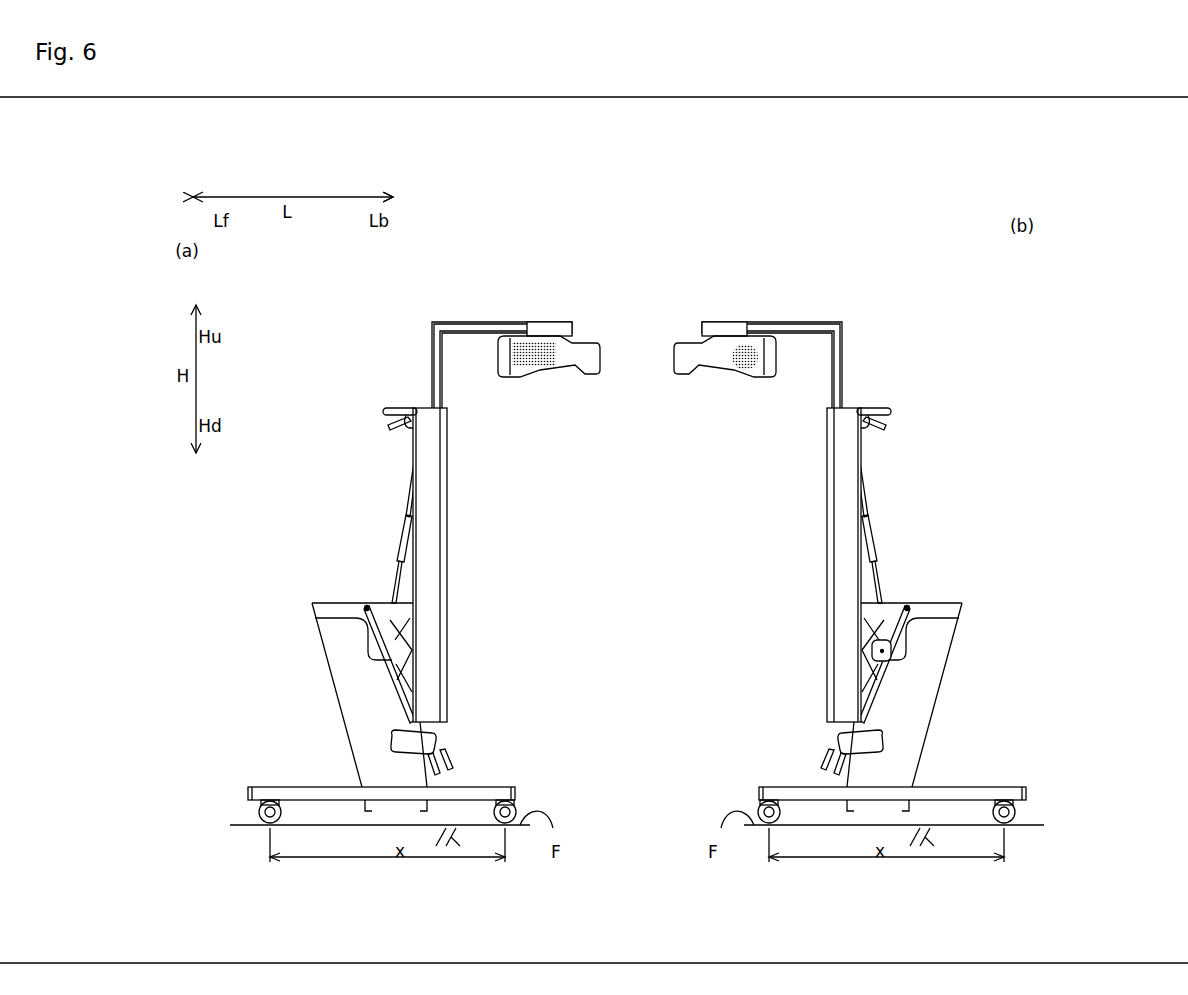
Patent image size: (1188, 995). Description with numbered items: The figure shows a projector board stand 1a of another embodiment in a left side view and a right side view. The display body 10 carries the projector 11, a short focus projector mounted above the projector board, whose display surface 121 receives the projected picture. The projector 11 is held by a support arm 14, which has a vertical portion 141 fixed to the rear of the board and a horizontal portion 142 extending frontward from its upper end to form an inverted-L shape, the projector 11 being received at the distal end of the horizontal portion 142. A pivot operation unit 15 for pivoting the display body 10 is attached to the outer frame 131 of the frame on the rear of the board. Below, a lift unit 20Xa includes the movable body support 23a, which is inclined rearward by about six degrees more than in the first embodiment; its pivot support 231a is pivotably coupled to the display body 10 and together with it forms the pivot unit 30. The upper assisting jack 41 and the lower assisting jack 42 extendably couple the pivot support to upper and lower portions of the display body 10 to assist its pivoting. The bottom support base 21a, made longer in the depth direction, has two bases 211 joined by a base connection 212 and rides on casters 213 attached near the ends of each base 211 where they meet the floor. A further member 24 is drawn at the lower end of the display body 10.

The projector board stand 1a is at (740, 303).
The display body 10 is at (362, 460).
The projector 11 is at (602, 346).
The support arm 14 is at (636, 338).
The vertical portion 141 is at (432, 366).
The horizontal portion 142 is at (490, 322).
The pivot operation unit 15 is at (379, 404).
The display surface 121 is at (447, 517).
The outer frame 131 is at (432, 492).
The pivot unit 30 is at (636, 592).
The upper assisting jack 41 is at (410, 520).
The lower assisting jack 42 is at (398, 683).
The opening of support frame 231a is at (332, 612).
The movable body support 23a is at (347, 720).
The lift unit 20Xa is at (624, 695).
The bottom support base 21a is at (184, 749).
The base 211 is at (303, 795).
The base connection 212 is at (280, 788).
The caster 213 is at (363, 808).
The foot member 24 is at (444, 733).